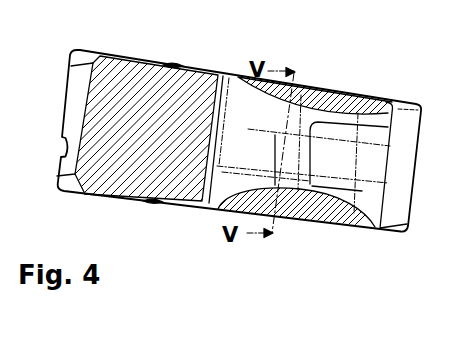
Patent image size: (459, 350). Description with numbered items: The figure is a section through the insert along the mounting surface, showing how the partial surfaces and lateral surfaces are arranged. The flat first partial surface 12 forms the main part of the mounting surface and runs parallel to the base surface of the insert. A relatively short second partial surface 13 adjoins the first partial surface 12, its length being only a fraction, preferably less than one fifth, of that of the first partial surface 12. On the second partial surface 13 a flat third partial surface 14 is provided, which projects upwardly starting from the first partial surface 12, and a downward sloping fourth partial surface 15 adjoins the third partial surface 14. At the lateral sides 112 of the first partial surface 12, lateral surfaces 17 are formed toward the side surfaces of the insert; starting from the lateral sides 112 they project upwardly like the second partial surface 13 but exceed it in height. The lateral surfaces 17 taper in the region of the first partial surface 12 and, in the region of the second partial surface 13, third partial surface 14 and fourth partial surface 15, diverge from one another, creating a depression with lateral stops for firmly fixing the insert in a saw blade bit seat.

The first partial surface 12 is at (240, 133).
The second partial surface 13 is at (305, 152).
The third partial surface 14 is at (343, 150).
The fourth partial surface 15 is at (367, 168).
The lateral surfaces 17 is at (322, 93).
The lateral sides 112 is at (248, 129).